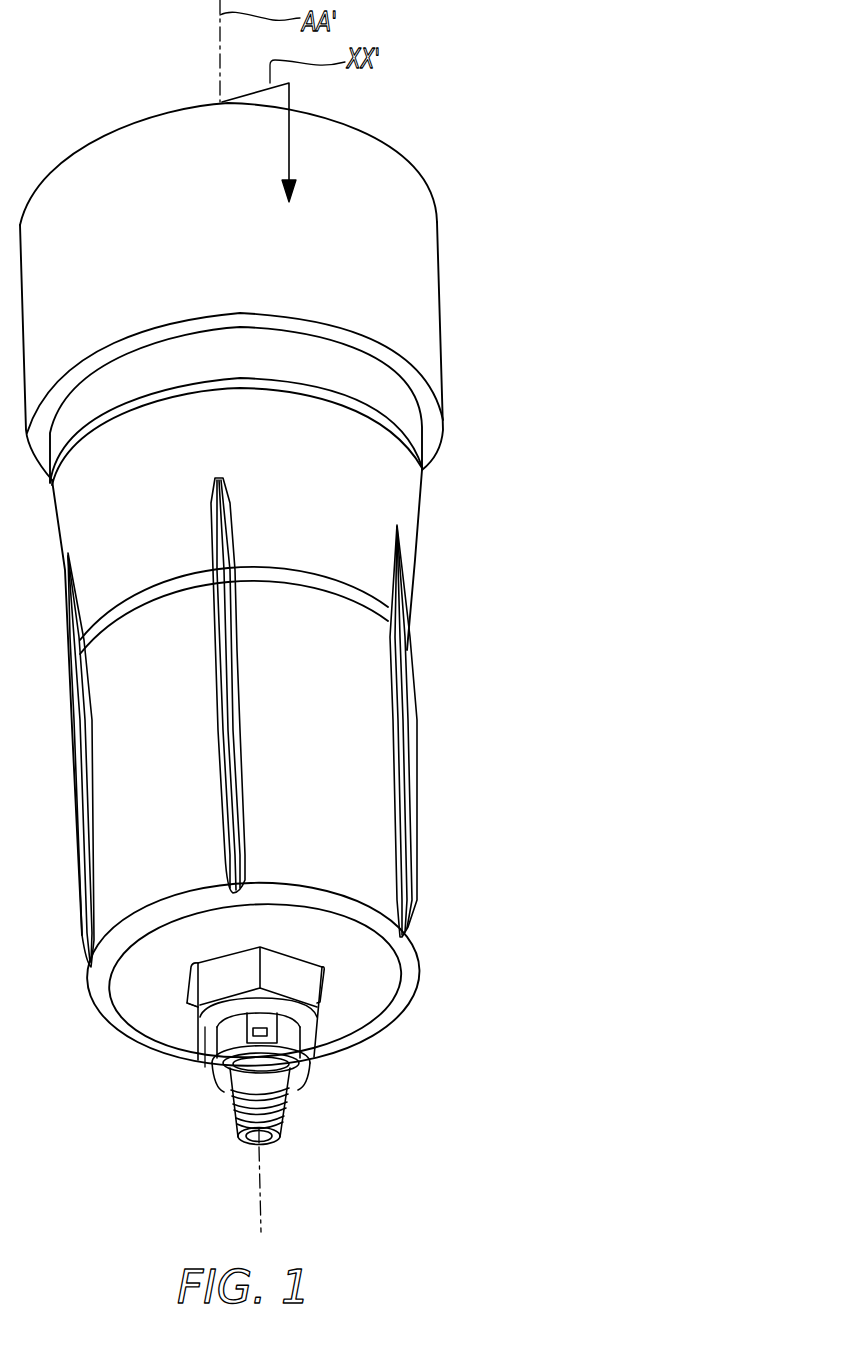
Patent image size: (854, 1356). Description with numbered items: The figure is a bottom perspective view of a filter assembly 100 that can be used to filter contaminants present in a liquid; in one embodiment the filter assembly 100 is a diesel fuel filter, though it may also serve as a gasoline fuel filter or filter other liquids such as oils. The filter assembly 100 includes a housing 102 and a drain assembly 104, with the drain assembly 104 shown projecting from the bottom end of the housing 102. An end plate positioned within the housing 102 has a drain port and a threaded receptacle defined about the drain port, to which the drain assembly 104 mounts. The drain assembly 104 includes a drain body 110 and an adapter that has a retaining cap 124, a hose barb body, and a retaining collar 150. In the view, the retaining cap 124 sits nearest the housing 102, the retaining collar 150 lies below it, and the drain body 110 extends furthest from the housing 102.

The filter assembly 100 is at (296, 616).
The housing 102 is at (411, 508).
The drain assembly 104 is at (295, 1046).
The drain body 110 is at (232, 1106).
The retaining cap 124 is at (195, 1037).
The retaining collar 150 is at (218, 1067).